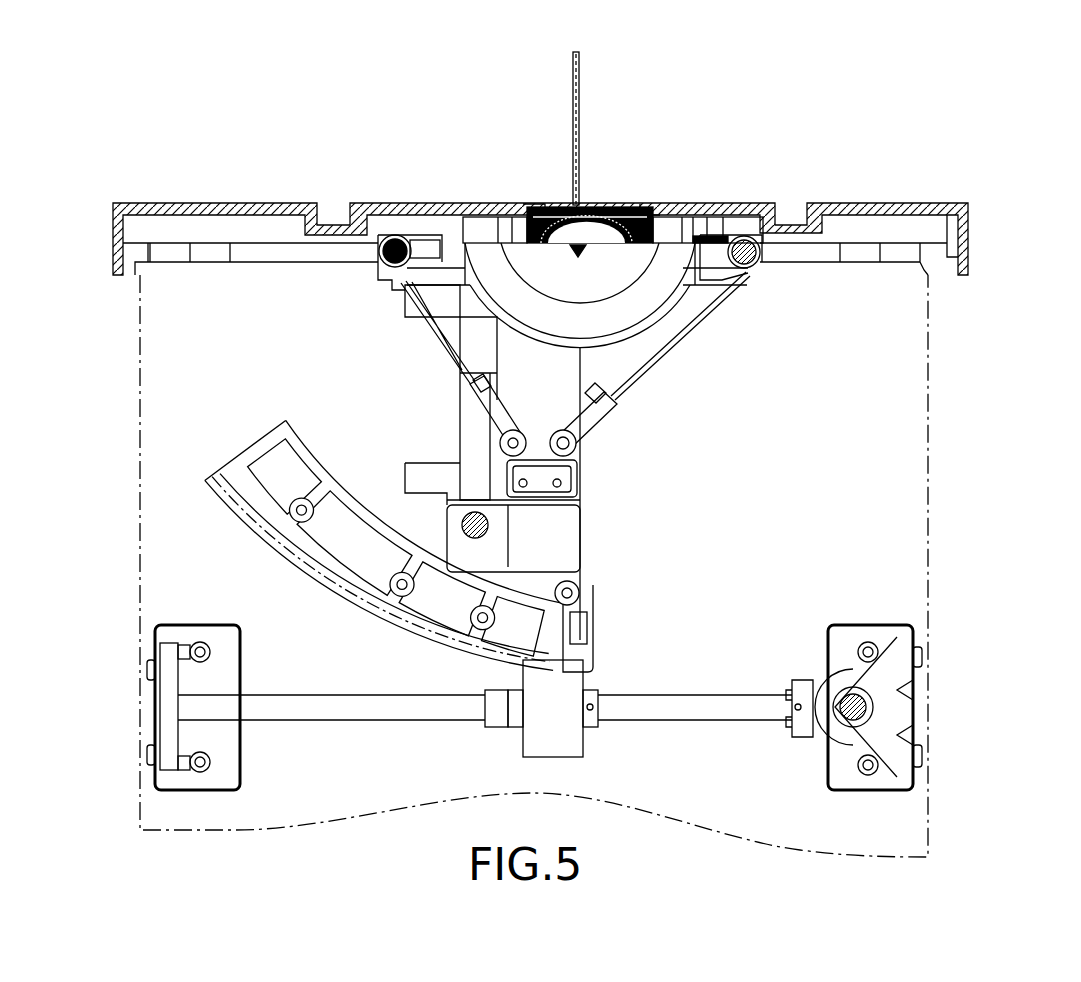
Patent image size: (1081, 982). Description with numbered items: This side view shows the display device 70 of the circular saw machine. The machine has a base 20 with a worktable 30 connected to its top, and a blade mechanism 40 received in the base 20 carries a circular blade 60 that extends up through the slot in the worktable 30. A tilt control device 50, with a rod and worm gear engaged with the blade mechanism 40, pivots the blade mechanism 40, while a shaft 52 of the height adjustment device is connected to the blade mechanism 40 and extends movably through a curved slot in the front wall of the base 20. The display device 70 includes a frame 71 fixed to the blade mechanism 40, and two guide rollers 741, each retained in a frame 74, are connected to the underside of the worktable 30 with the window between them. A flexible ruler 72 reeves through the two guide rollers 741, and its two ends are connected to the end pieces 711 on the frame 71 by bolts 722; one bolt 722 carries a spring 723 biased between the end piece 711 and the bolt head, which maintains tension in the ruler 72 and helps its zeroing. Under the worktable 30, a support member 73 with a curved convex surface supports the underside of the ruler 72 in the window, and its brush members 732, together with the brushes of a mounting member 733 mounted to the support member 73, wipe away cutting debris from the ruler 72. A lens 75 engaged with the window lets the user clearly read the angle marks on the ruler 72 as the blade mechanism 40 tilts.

The base 20 is at (930, 455).
The worktable 30 is at (220, 185).
The blade mechanism 40 is at (586, 571).
The tilt control device 50 is at (680, 720).
The shaft 52 is at (470, 538).
The circular blade 60 is at (580, 99).
The display device 70 is at (728, 317).
The frame 71 is at (580, 500).
The end piece 711 is at (593, 447).
The flexible ruler 72 is at (690, 330).
The bolt 722 is at (605, 413).
The spring 723 is at (503, 425).
The support member 73 is at (610, 204).
The brush member 732 is at (528, 203).
The mounting member 733 is at (660, 204).
The frame 74 is at (393, 235).
The guide roller 741 is at (415, 203).
The lens 75 is at (628, 204).